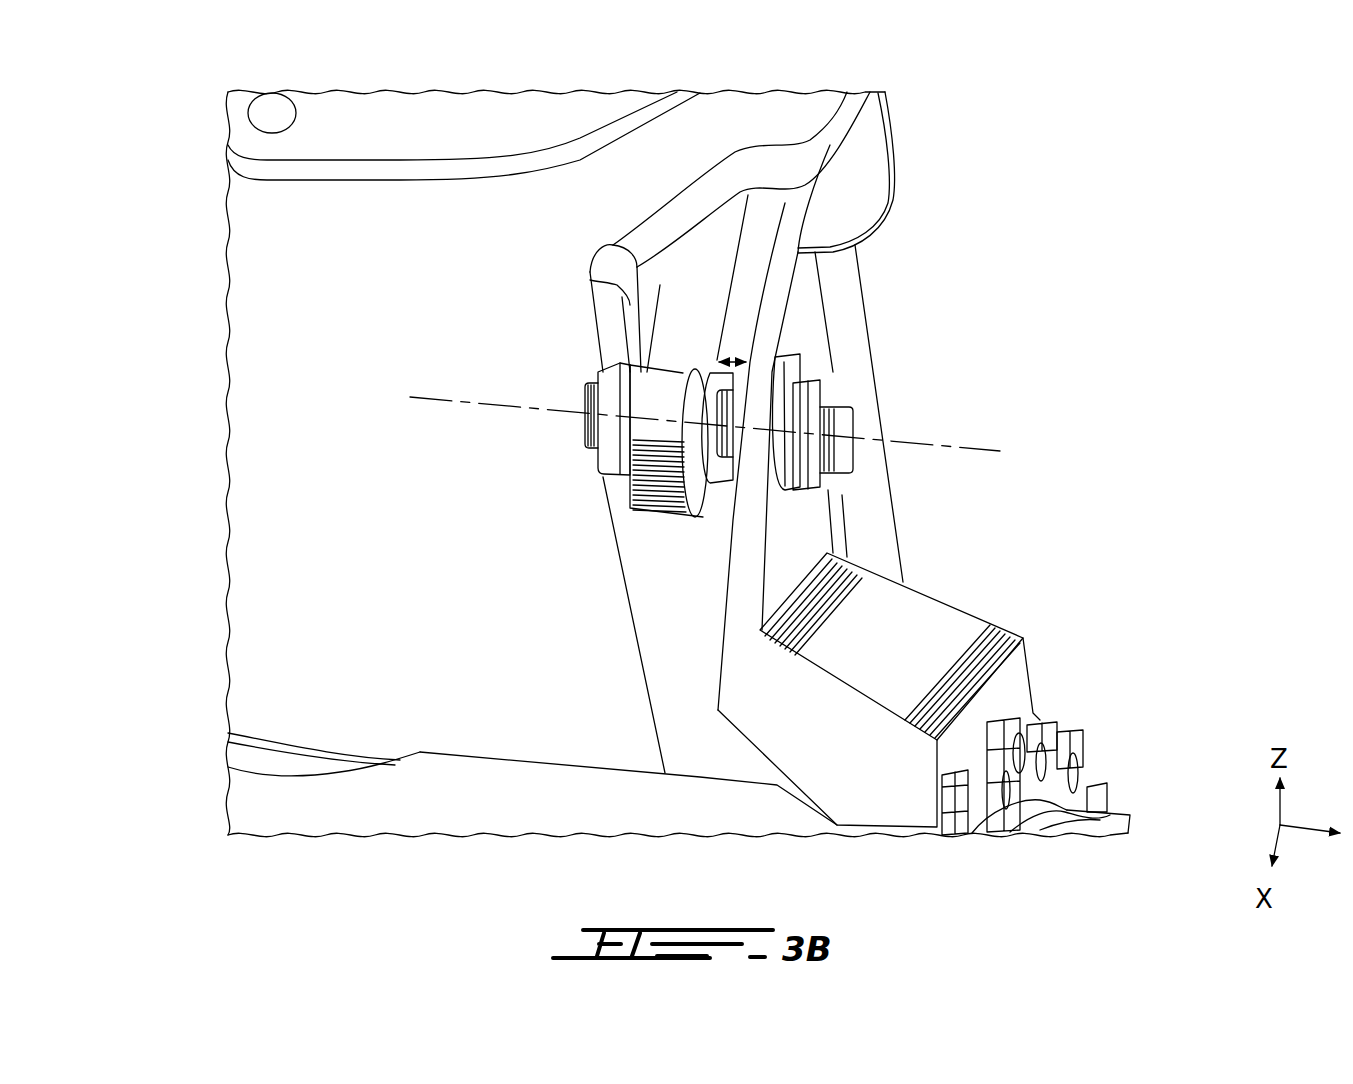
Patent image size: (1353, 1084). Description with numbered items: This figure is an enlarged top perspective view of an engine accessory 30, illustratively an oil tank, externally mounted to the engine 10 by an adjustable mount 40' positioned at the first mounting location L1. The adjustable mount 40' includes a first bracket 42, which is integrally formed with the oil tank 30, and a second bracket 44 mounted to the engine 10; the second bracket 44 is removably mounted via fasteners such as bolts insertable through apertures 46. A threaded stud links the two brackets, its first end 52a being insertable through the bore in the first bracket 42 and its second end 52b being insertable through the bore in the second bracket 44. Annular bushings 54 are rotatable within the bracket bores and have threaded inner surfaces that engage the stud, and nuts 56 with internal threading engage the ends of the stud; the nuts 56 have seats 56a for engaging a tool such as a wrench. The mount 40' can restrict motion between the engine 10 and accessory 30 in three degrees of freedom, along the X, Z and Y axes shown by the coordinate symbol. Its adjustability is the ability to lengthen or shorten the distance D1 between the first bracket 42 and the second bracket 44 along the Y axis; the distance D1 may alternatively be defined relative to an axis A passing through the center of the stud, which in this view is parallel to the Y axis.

The engine 10 is at (198, 832).
The engine accessory 30 is at (158, 158).
The adjustable mount 40' is at (1039, 613).
The first bracket 42 is at (690, 278).
The second bracket 44 is at (905, 622).
The apertures 46 is at (973, 797).
The first end 52a is at (590, 408).
The second end 52b is at (853, 430).
The bushings 54 is at (723, 393).
The nuts 56 is at (617, 442).
The seats 56a is at (613, 400).
The axis A is at (719, 431).
The distance D1 is at (790, 203).
The first mounting location L1 is at (943, 851).